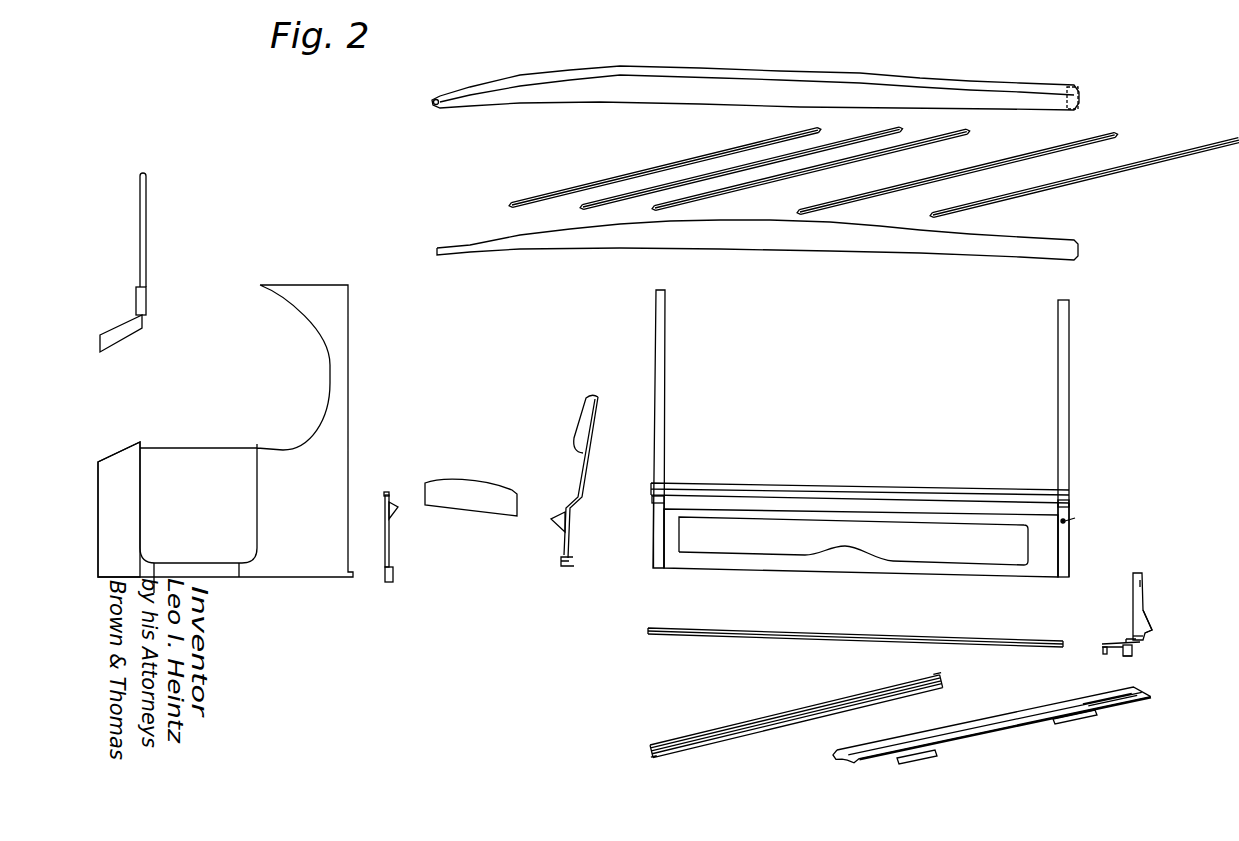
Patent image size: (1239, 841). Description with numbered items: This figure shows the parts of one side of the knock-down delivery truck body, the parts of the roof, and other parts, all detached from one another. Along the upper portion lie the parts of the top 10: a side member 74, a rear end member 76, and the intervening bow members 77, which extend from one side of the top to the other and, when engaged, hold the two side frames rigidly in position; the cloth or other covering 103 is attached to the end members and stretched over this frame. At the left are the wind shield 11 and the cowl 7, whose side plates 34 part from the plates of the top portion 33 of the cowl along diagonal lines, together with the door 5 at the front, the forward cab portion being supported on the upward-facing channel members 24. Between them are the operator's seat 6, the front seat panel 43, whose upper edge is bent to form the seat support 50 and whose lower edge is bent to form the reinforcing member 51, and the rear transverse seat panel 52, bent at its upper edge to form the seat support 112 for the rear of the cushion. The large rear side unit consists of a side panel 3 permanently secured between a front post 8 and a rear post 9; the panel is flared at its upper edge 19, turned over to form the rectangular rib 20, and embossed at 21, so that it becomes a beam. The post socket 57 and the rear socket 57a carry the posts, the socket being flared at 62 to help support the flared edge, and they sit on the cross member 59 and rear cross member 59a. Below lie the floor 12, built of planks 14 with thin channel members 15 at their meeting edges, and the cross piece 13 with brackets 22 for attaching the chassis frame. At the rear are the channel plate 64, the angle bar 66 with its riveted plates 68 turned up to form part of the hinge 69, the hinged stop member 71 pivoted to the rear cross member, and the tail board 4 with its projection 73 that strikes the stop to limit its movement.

The side panel 3 is at (786, 546).
The tail board 4 is at (1136, 600).
The door 5 is at (226, 449).
The operator's seat 6 is at (470, 504).
The cowl 7 is at (135, 269).
The front post 8 is at (666, 400).
The rear post 9 is at (1058, 346).
The top 10 is at (798, 163).
The wind shield 11 is at (147, 243).
The floor 12 is at (855, 630).
The cross piece 13 is at (990, 717).
The plank 14 is at (786, 633).
The channel member 15 is at (434, 108).
The flared upper edge 19 is at (908, 503).
The rectangular rib 20 is at (722, 488).
The embossing 21 is at (861, 555).
The bracket 22 is at (918, 760).
The channel member 24 is at (213, 573).
The top portion of the cowl 33 is at (114, 340).
The side plate 34 is at (118, 456).
The front seat panel 43 is at (390, 546).
The seat support 50 is at (392, 500).
The reinforcing member 51 is at (394, 578).
The rear transverse seat panel 52 is at (559, 482).
The post socket 57 is at (654, 541).
The socket 57a is at (1070, 552).
The cross member 59 is at (778, 730).
The cross member 59a is at (1122, 660).
The flared portion of post socket 62 is at (652, 504).
The channel plate 64 is at (1130, 638).
The angle bar 66 is at (1103, 650).
The plate 68 is at (1122, 644).
The hinge 69 is at (1143, 642).
The hinged stop member 71 is at (1133, 647).
The projection 73 is at (1154, 636).
The side member 74 is at (783, 242).
The rear end member 76 is at (1078, 100).
The bow member 77 is at (1016, 193).
The covering 103 is at (718, 66).
The seat support 112 is at (557, 516).